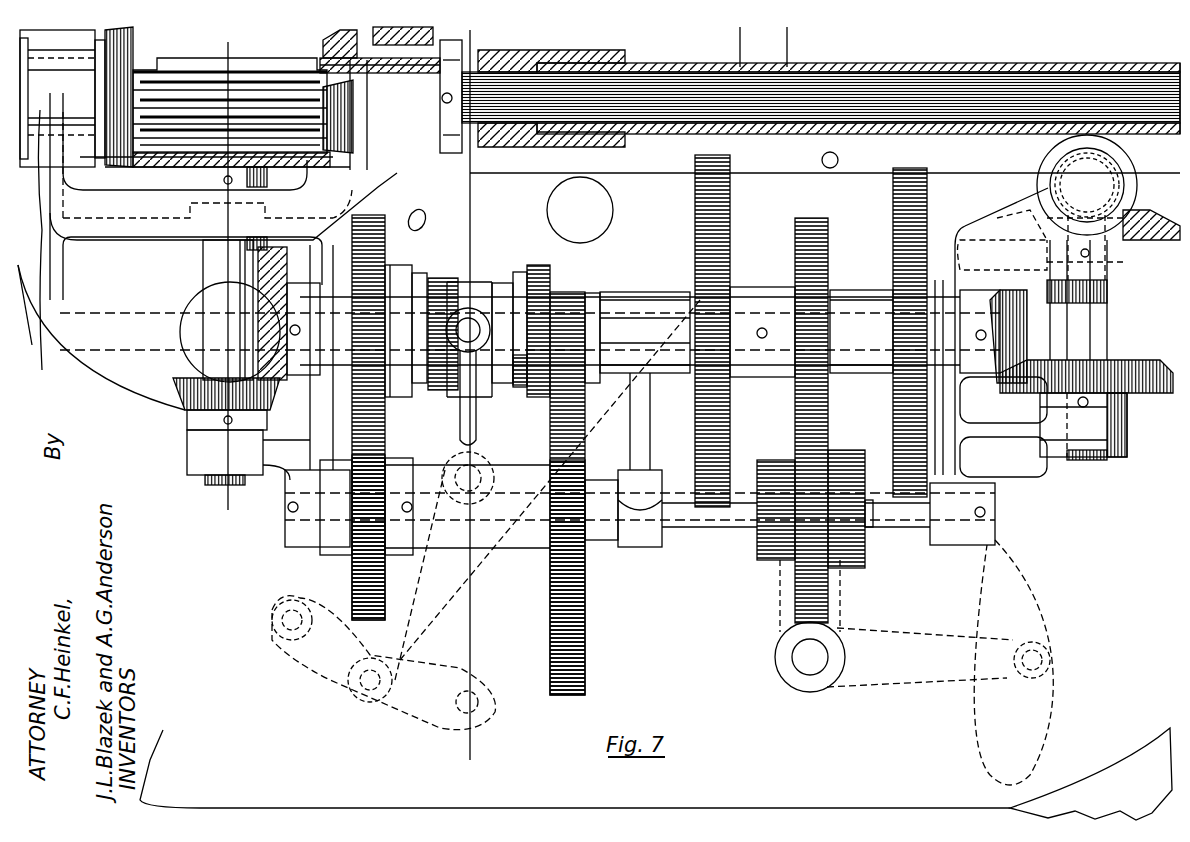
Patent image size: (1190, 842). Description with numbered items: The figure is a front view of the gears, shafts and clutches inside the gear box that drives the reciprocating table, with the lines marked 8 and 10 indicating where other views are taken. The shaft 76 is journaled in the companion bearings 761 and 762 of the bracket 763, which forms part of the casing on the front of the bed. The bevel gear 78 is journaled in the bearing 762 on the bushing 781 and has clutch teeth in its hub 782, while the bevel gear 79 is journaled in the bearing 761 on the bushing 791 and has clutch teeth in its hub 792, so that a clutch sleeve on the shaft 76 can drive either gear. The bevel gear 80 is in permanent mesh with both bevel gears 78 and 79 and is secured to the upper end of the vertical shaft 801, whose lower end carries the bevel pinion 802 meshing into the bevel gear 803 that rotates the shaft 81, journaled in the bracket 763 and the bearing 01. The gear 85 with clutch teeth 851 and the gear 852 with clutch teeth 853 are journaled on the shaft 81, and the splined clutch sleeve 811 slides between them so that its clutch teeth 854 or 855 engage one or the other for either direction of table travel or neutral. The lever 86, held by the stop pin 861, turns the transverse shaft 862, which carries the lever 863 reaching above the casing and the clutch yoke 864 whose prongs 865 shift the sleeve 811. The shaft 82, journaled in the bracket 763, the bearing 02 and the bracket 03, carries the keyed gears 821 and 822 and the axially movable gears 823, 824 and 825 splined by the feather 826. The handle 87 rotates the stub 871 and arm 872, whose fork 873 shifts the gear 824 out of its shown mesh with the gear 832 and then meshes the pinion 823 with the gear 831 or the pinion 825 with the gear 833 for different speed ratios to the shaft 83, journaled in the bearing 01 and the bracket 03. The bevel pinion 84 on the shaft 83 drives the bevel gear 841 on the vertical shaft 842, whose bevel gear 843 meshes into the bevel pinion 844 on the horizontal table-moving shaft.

The section line 8 is at (224, 278).
The section line 10 is at (478, 403).
The shaft 76 is at (705, 92).
The bevel gear 78 is at (335, 40).
The bevel gear 79 is at (128, 50).
The bevel gear 80 is at (160, 185).
The shaft 81 is at (610, 295).
The shaft 82 is at (730, 530).
The shaft 83 is at (690, 300).
The bevel pinion 84 is at (1025, 336).
The gear 85 is at (408, 413).
The lever 86 is at (410, 625).
The lever or handle 87 is at (935, 688).
The bearing 01 is at (640, 295).
The bearing 02 is at (755, 432).
The bracket 03 is at (950, 390).
The bearing 761 is at (90, 175).
The bearing 762 is at (447, 160).
The bracket 763 is at (158, 228).
The bushing 781 is at (340, 60).
The hub 782 is at (300, 60).
The bushing 791 is at (60, 270).
The hub 792 is at (240, 40).
The vertical shaft 801 is at (220, 270).
The bevel pinion 802 is at (180, 375).
The bevel gear 803 is at (260, 365).
The clutch sleeve 811 is at (492, 405).
The gear 821 is at (352, 575).
The gear 822 is at (585, 639).
The pinion 823 is at (775, 570).
The gear 824 is at (790, 629).
The pinion 825 is at (845, 568).
The feather 826 is at (870, 530).
The gear 831 is at (695, 199).
The gear 832 is at (822, 230).
The gear 833 is at (893, 231).
The bevel gear 841 is at (1047, 420).
The vertical shaft 842 is at (1095, 322).
The bevel gear 843 is at (1150, 238).
The bevel pinion 844 is at (1050, 170).
The clutch teeth 851 is at (428, 268).
The gear 852 is at (568, 292).
The clutch teeth 853 is at (520, 270).
The clutch teeth 854 is at (440, 280).
The clutch teeth 855 is at (505, 290).
The stop pin 861 is at (368, 700).
The transverse shaft 862 is at (480, 555).
The lever 863 is at (763, 47).
The clutch yoke 864 is at (445, 444).
The prongs 865 is at (470, 308).
The stub 871 is at (810, 692).
The arm 872 is at (780, 604).
The fork 873 is at (770, 470).